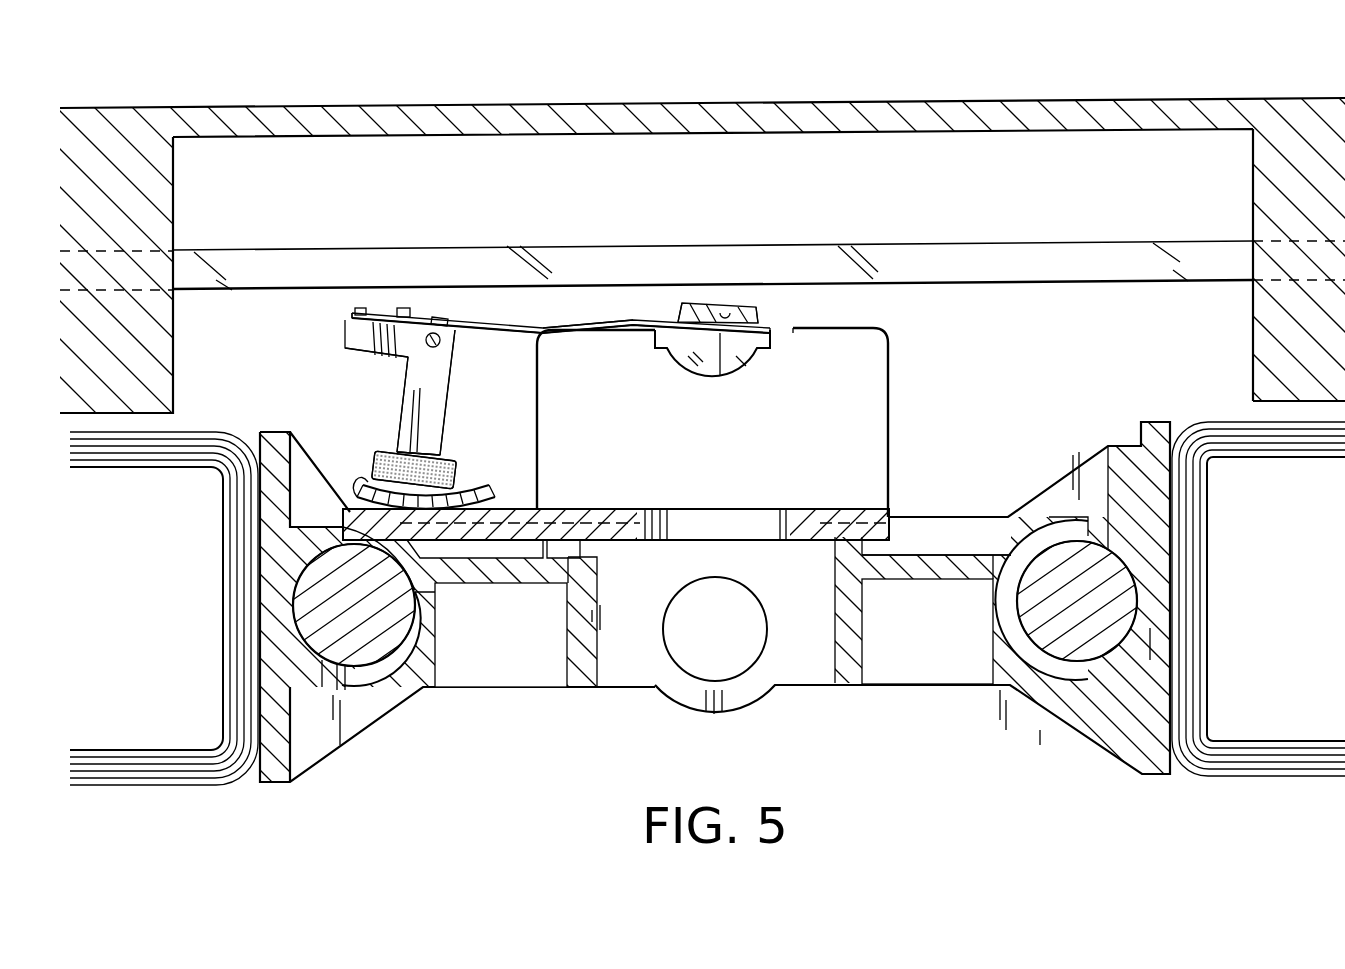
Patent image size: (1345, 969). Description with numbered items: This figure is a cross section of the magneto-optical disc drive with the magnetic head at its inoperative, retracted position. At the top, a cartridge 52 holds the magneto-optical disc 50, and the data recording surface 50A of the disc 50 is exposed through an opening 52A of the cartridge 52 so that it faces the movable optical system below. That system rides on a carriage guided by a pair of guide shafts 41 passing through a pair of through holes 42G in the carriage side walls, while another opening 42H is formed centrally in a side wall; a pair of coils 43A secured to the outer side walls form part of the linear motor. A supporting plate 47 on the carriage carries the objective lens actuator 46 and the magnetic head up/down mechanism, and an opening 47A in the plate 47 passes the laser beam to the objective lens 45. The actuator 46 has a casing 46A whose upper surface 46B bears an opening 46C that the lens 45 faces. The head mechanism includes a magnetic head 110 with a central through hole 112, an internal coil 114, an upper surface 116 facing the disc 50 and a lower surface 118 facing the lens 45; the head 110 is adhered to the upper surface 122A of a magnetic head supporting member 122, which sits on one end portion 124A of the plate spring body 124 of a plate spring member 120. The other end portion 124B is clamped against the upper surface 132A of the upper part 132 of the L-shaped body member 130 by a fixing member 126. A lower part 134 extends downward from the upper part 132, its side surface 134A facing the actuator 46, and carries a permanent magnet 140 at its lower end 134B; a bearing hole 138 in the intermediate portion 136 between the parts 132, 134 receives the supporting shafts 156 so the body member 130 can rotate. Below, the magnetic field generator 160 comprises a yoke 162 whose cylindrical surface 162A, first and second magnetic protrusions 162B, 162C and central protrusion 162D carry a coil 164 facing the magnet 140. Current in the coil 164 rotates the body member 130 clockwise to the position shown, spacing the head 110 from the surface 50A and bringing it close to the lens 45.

The cartridge 52 is at (1262, 100).
The opening 52A is at (1252, 360).
The magneto-optical disc 50 is at (1130, 243).
The data recording surface 50A is at (1058, 283).
The objective lens actuator 46 is at (887, 433).
The casing 46A is at (889, 368).
The upper surface 46B is at (828, 327).
The opening 46C is at (784, 335).
The plate spring body 124 is at (526, 329).
The plate spring member 120 is at (536, 322).
The other end portion 124B is at (350, 315).
The upper part 132 is at (345, 340).
The body member 130 is at (377, 371).
The upper surface 132A is at (362, 308).
The fixing member 126 is at (400, 308).
The supporting shafts 156 is at (433, 332).
The bearing hole 138 is at (443, 318).
The stem upper portion 136 is at (442, 368).
The lower part 134 is at (408, 407).
The side surface 134A is at (447, 402).
The lower end 134B is at (400, 452).
The magnetic field generator 160 is at (320, 420).
The permanent magnet 140 is at (452, 459).
The second magnetic protrusion 162C is at (486, 487).
The first magnetic protrusion 162B is at (360, 482).
The magnetic head 110 is at (689, 303).
The through hole 112 is at (712, 304).
The coil 114 is at (738, 305).
The upper surface 116 is at (752, 306).
The magnetic head supporting member 122 is at (666, 320).
The upper surface 122A is at (762, 318).
The objective lens 45 is at (680, 357).
The one end portion 124A is at (720, 375).
The lower surface 118 is at (758, 350).
The supporting plate 47 is at (575, 508).
The opening 47A is at (655, 508).
The through holes 42G is at (378, 723).
The guide shafts 41 is at (405, 640).
The opening 42H is at (763, 625).
The yoke 162 is at (342, 507).
The protrusion 162D is at (405, 545).
The surface 162A is at (436, 590).
The coil 164 is at (505, 560).
The coils 43A is at (158, 775).